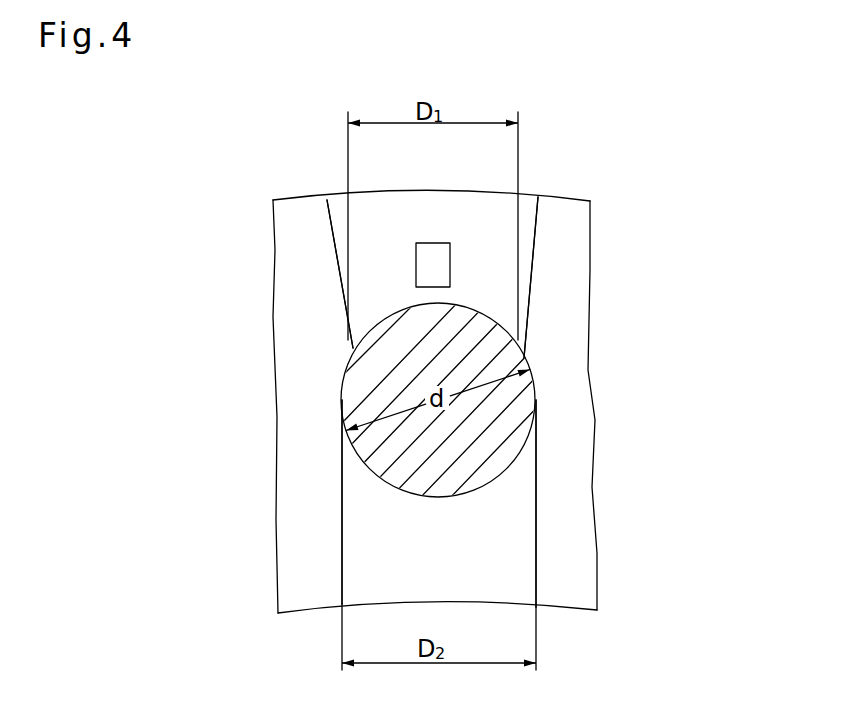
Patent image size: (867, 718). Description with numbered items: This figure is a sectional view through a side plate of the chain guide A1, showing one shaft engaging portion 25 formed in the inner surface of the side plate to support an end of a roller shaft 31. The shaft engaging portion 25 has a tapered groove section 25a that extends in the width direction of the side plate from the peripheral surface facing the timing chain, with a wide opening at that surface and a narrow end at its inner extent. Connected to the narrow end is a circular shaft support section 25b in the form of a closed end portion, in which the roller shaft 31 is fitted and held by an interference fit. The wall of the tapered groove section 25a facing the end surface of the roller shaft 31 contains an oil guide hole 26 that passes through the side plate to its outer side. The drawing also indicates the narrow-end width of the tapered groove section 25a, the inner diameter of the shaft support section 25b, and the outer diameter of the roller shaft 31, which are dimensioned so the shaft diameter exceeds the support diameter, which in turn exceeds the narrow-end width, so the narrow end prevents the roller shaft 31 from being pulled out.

The chain guide A1 is at (268, 199).
The shaft engaging portion 25 is at (340, 205).
The tapered groove section 25a is at (338, 267).
The shaft support section 25b is at (337, 398).
The oil guide hole 26 is at (440, 267).
The roller shaft 31 is at (520, 408).